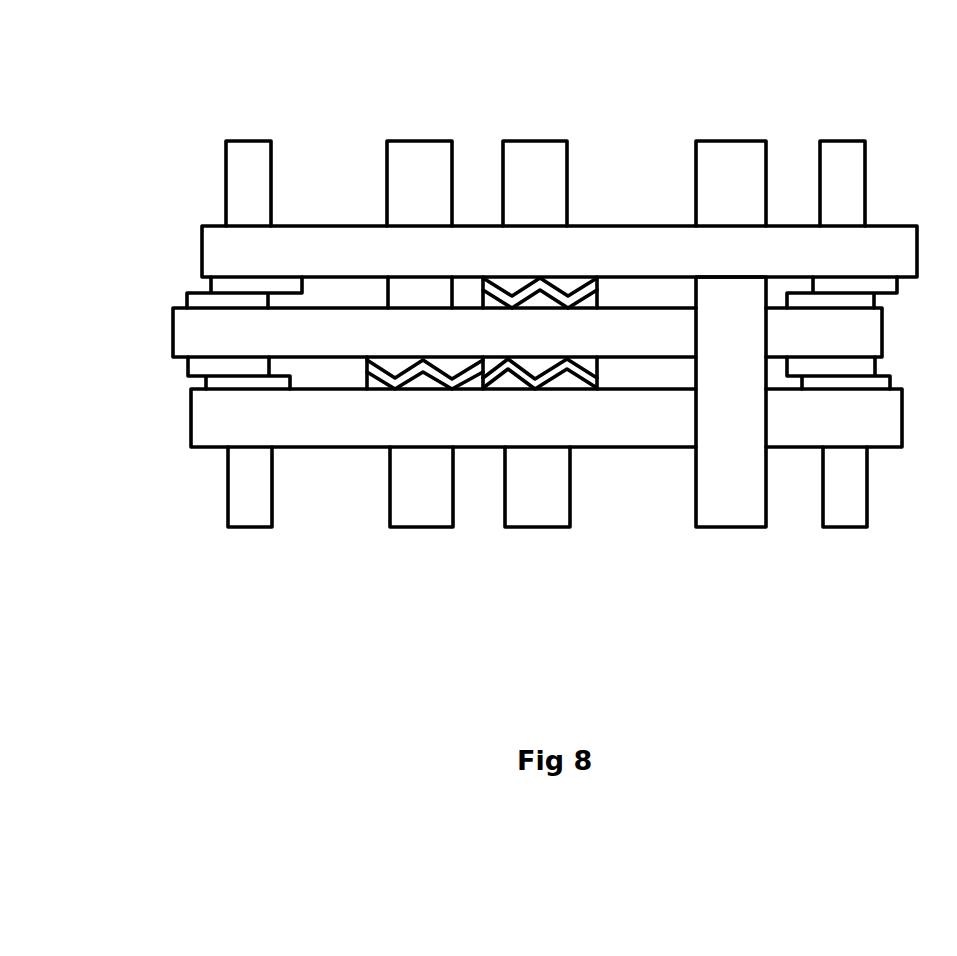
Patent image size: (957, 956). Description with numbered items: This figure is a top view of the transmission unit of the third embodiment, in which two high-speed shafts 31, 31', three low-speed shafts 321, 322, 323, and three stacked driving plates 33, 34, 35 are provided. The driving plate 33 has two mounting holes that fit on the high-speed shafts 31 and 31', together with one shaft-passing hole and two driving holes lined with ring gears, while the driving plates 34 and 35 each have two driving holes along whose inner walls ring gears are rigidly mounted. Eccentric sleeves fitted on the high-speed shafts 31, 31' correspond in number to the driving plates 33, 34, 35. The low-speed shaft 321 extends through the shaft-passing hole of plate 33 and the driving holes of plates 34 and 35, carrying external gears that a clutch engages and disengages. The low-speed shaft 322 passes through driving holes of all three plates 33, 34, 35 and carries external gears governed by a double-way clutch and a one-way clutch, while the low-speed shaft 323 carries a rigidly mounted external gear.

The driving plate 33 is at (215, 240).
The driving plate 34 is at (185, 325).
The driving plate 35 is at (202, 422).
The high-speed shaft 31 is at (244, 399).
The high-speed shaft 31' is at (872, 404).
The low-speed shaft 321 is at (430, 516).
The low-speed shaft 322 is at (545, 515).
The low-speed shaft 323 is at (727, 515).